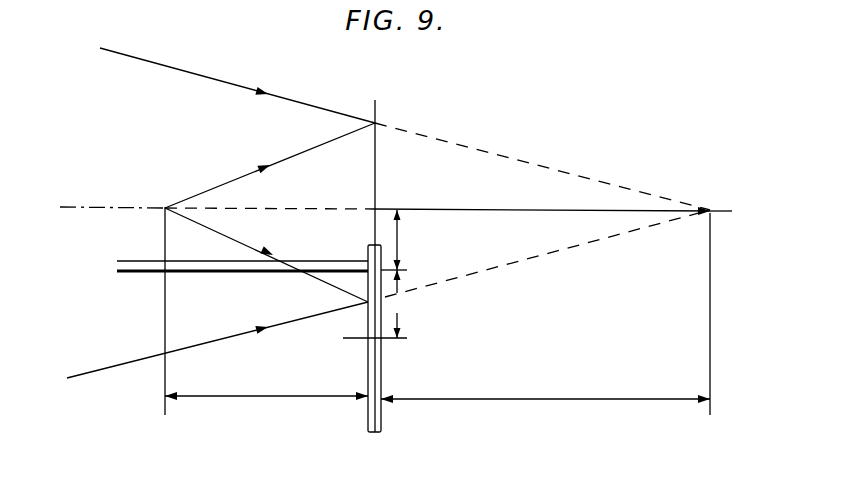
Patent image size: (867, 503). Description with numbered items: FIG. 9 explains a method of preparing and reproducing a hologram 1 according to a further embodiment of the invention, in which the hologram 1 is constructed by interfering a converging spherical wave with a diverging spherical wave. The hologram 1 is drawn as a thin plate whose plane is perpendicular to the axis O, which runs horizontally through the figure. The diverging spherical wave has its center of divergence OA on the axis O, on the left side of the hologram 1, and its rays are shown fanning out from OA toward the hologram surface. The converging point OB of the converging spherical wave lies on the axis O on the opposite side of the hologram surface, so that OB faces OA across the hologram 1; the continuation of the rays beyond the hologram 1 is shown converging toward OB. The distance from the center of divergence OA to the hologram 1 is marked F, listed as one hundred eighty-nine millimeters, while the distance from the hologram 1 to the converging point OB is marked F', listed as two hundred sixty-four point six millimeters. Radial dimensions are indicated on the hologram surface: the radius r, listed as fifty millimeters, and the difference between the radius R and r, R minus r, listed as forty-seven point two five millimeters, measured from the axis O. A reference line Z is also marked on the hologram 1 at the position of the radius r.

The hologram 1 is at (371, 432).
The axis O is at (387, 208).
The center of divergence OA is at (165, 298).
The converging point OB is at (722, 302).
The radial distance R is at (406, 240).
The radius r is at (397, 304).
The reference line Z is at (384, 341).
The distance F is at (266, 387).
The distance F' is at (545, 389).